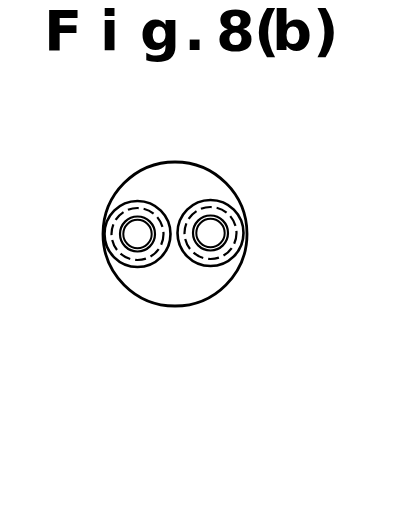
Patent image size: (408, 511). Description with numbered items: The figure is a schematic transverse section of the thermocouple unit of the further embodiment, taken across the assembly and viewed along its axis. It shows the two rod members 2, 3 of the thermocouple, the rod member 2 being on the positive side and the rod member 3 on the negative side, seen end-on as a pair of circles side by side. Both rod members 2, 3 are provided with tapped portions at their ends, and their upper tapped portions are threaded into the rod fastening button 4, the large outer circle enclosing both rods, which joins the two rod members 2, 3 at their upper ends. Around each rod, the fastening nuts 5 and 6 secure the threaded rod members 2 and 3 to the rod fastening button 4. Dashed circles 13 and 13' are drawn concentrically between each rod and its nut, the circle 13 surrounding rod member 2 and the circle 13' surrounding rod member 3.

The rod member 2 is at (132, 236).
The rod member 3 is at (213, 235).
The rod fastening button 4 is at (207, 188).
The fastening nut 5 is at (102, 217).
The fastening nut 6 is at (236, 218).
The cushioning layer 13 is at (126, 196).
The cushioning layer 13' is at (250, 206).